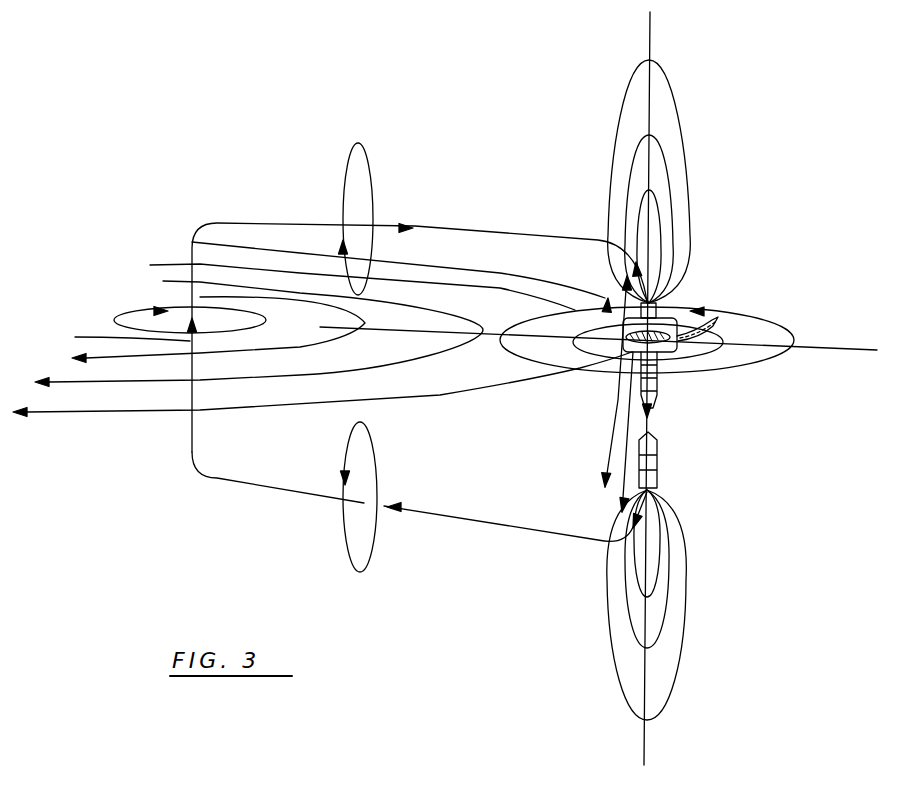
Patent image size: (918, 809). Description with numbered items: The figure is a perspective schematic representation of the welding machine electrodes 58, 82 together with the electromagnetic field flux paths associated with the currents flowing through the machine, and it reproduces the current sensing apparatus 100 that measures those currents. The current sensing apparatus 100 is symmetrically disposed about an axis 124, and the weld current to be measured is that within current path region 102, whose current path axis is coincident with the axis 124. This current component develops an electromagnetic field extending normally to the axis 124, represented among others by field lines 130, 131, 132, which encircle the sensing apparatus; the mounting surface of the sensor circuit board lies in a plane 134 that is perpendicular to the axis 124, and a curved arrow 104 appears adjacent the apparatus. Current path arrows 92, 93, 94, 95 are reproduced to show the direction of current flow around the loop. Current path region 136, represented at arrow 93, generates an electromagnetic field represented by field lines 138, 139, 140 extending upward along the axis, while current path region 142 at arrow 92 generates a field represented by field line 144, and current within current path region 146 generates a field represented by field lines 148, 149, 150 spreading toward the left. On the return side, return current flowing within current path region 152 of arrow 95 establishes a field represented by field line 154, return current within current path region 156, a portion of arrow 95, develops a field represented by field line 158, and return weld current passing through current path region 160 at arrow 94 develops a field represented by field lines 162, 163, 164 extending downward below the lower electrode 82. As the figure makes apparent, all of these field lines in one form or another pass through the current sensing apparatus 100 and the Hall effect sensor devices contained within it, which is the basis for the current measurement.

The electrode 58 is at (657, 395).
The electrode 82 is at (657, 460).
The current path arrow 92 is at (280, 222).
The current path arrow 93 is at (566, 240).
The current path arrow 94 is at (512, 527).
The current path arrow 95 is at (240, 482).
The current sensing apparatus 100 is at (692, 303).
The current path region 102 is at (672, 292).
The rotation direction arrow 104 is at (704, 311).
The axis 124 is at (652, 25).
The field line 130 is at (705, 372).
The field line 131 is at (742, 366).
The field line 132 is at (778, 322).
The plane 134 is at (815, 348).
The current path region 136 is at (497, 232).
The field line 138 is at (660, 218).
The field line 139 is at (665, 162).
The field line 140 is at (676, 96).
The current path region 142 is at (315, 222).
The field line 144 is at (372, 165).
The current path region 146 is at (331, 283).
The field line 148 is at (83, 412).
The field line 149 is at (108, 382).
The field line 150 is at (148, 358).
The current path region 152 is at (112, 337).
The field line 154 is at (168, 311).
The current path region 156 is at (302, 495).
The field line 158 is at (372, 448).
The current path region 160 is at (648, 493).
The field line 162 is at (633, 563).
The field line 163 is at (622, 615).
The field line 164 is at (612, 676).